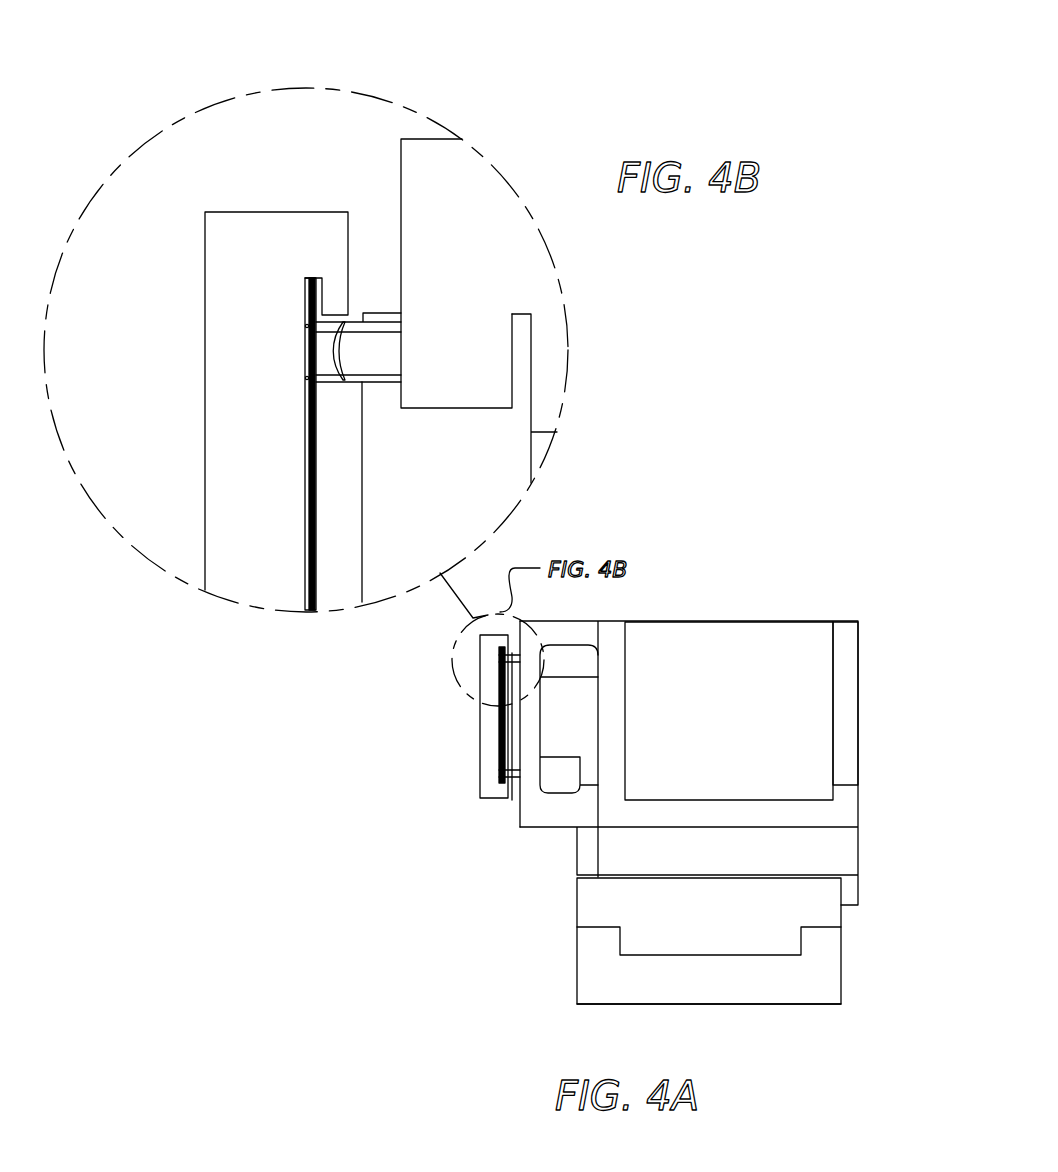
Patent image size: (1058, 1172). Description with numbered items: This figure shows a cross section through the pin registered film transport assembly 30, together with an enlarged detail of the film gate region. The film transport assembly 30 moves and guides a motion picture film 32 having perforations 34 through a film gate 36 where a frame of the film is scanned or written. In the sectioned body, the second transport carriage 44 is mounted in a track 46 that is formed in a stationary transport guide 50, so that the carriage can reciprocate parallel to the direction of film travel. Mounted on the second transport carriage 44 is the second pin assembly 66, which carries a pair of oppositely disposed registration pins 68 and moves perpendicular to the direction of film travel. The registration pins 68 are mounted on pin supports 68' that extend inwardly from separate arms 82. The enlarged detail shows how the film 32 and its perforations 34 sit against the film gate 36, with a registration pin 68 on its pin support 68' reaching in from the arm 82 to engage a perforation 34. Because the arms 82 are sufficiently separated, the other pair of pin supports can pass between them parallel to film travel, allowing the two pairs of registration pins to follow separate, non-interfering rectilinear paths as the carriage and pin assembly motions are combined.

In FIG. 4A, the film transport assembly 30 is at (773, 614).
In FIG. 4B, the motion picture film 32 is at (313, 572).
In FIG. 4B, the perforations 34 is at (306, 340).
In FIG. 4B, the film gate 36 is at (207, 424).
In FIG. 4A, the film gate 36 is at (478, 768).
In FIG. 4A, the second transport carriage 44 is at (587, 903).
In FIG. 4A, the track 46 is at (728, 955).
In FIG. 4A, the stationary transport guide 50 is at (830, 990).
In FIG. 4A, the second pin assembly 66 is at (768, 706).
In FIG. 4B, the registration pins 68 is at (374, 385).
In FIG. 4B, the pin supports 68' is at (571, 398).
In FIG. 4B, the arms 82 is at (453, 172).